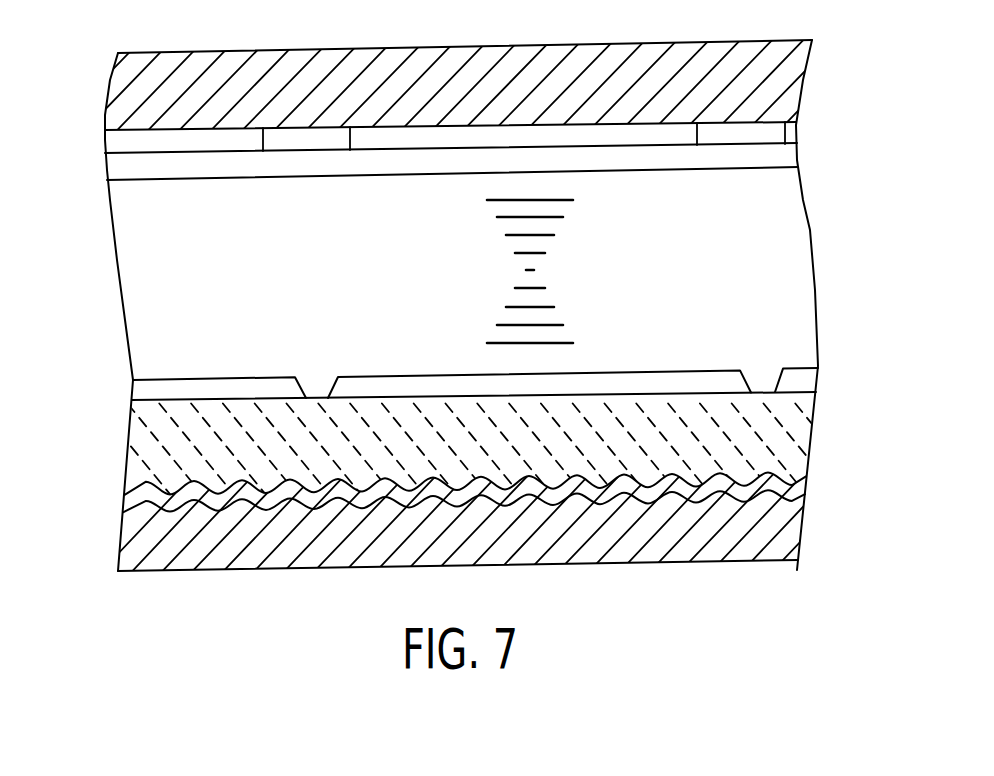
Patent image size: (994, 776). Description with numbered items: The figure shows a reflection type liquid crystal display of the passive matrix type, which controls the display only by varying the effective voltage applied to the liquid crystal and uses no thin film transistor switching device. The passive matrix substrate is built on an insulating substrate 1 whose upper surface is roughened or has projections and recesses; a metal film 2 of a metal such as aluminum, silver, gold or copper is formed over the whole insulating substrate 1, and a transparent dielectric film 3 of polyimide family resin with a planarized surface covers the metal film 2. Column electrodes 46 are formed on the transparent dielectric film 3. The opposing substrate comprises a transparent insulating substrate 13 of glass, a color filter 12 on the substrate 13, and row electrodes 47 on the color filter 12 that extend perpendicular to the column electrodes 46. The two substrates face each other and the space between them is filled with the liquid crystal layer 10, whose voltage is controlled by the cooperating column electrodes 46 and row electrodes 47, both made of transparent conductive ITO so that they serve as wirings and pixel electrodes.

The insulating substrate 1 is at (797, 517).
The metal film 2 is at (793, 493).
The transparent dielectric film 3 is at (797, 415).
The column electrodes 46 is at (588, 387).
The liquid crystal layer 10 is at (130, 233).
The row electrodes 47 is at (788, 158).
The color filter 12 is at (113, 146).
The transparent insulating substrate 13 is at (760, 88).